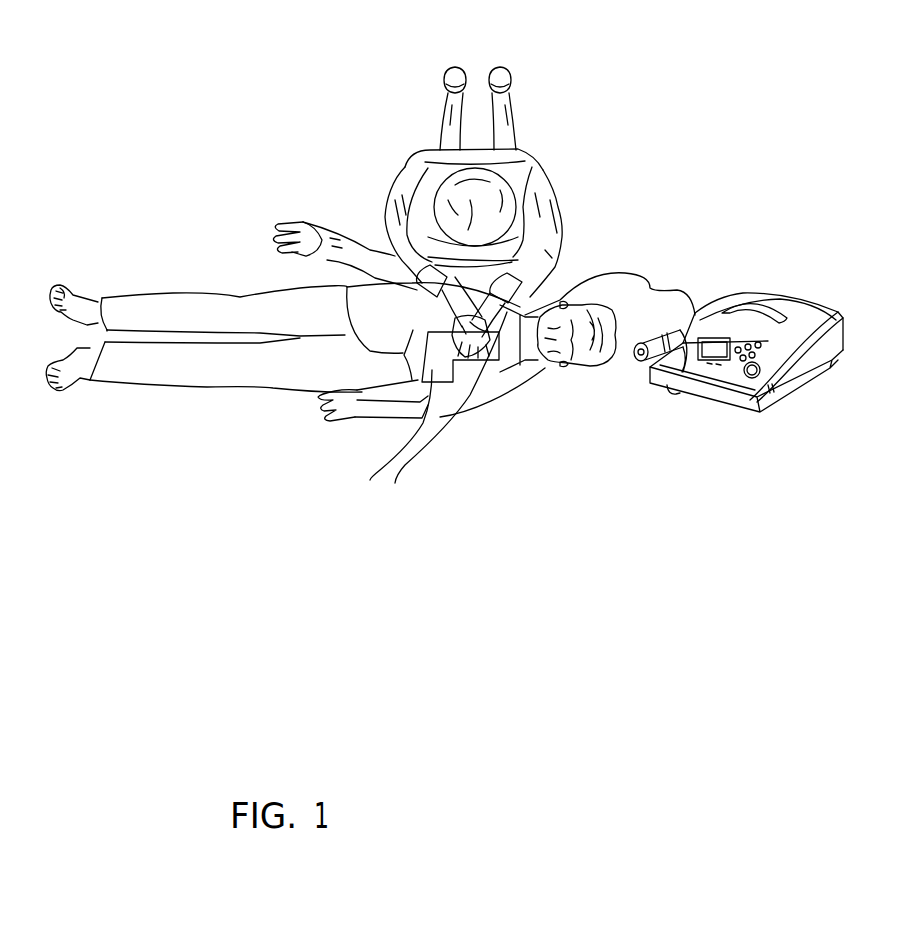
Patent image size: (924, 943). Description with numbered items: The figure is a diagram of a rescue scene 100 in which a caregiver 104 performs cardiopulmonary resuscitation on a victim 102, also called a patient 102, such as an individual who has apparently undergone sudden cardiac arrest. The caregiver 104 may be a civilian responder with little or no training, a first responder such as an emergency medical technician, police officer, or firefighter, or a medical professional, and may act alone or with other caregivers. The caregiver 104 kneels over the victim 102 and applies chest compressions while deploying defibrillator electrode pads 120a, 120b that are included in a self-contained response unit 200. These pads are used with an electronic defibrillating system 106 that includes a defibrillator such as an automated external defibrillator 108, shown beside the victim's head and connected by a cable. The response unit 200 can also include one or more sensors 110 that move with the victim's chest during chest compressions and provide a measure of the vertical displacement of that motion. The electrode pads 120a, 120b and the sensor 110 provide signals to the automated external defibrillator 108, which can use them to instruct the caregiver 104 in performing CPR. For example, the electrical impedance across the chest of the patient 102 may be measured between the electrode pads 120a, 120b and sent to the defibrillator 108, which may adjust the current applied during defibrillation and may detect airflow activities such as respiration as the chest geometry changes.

The rescue scene 100 is at (258, 106).
The victim 102 is at (128, 298).
The caregiver 104 is at (397, 202).
The electronic defibrillating system 106 is at (835, 477).
The automated external defibrillator 108 is at (807, 302).
The sensor 110 is at (515, 358).
The defibrillator electrode pad 120a is at (370, 480).
The defibrillator electrode pad 120b is at (395, 483).
The self-contained response unit 200 is at (340, 330).